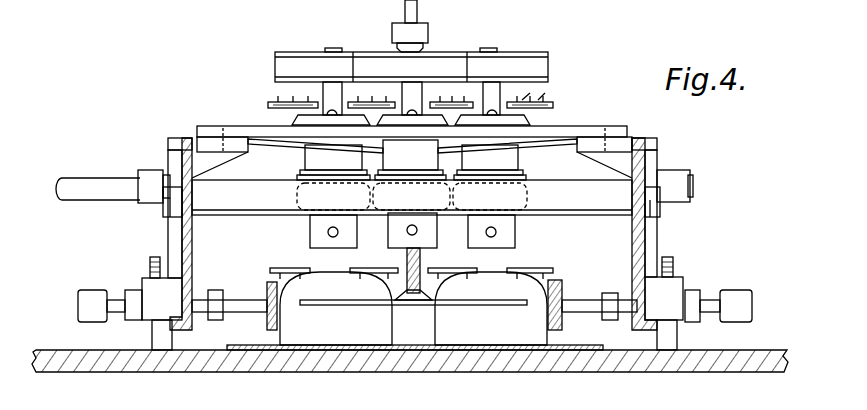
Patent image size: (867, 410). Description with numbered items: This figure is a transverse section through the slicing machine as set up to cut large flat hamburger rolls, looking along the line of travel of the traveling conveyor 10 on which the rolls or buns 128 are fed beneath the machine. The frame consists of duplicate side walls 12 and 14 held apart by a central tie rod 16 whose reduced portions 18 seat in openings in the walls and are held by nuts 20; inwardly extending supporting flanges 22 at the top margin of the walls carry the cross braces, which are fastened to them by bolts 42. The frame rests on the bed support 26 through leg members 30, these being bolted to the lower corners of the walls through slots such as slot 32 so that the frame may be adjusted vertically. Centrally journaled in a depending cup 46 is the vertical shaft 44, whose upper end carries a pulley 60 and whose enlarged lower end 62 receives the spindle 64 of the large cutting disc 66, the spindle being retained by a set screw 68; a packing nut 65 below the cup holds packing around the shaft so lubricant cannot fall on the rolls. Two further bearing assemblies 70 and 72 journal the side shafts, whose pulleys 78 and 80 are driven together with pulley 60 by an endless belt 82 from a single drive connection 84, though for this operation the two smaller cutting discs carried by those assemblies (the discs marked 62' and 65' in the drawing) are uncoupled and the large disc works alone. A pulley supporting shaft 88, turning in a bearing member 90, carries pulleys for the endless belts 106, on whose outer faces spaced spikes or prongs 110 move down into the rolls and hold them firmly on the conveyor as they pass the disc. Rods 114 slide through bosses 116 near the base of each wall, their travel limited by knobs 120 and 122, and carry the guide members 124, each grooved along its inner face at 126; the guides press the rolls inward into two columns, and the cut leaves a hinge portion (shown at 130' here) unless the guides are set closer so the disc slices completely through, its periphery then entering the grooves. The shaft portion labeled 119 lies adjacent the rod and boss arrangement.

The traveling conveyor 10 is at (590, 315).
The side wall 12 is at (657, 147).
The side wall 14 is at (168, 144).
The central tie rod 16 is at (250, 192).
The reduced portions 18 is at (170, 220).
The nuts 20 is at (168, 205).
The supporting flanges 22 is at (190, 137).
The bed support 26 is at (385, 362).
The leg members 30 is at (152, 339).
The slots 32 is at (660, 152).
The bolts 42 is at (222, 136).
The shaft 44 is at (407, 95).
The depending cup 46 is at (410, 160).
The pulley 60 is at (432, 50).
The enlarged lower end of shaft 62 is at (433, 231).
The clamp block 62' is at (404, 231).
The spindle 64 is at (422, 268).
The packing nut 65 is at (411, 196).
The cylinder 65' is at (411, 196).
The cutting disc 66 is at (425, 306).
The set screw 68 is at (395, 228).
The bearing assembly 70 is at (302, 149).
The bearing assembly 72 is at (519, 152).
The pulley 78 is at (276, 53).
The pulley 80 is at (546, 53).
The endless belt 82 is at (275, 66).
The drive connection 84 is at (418, 12).
The pulley supporting shaft 88 is at (114, 190).
The bearing member 90 is at (668, 184).
The endless belts 106 is at (270, 102).
The spikes or prongs 110 is at (548, 100).
The rods 114 is at (120, 305).
The bosses 116 is at (155, 292).
The shaft 119 is at (414, 285).
The knob 120 is at (690, 297).
The knob 122 is at (232, 280).
The guide member 124 is at (265, 330).
The groove 126 is at (267, 305).
The rolls or buns 128 is at (282, 373).
The roll support 130' is at (441, 293).